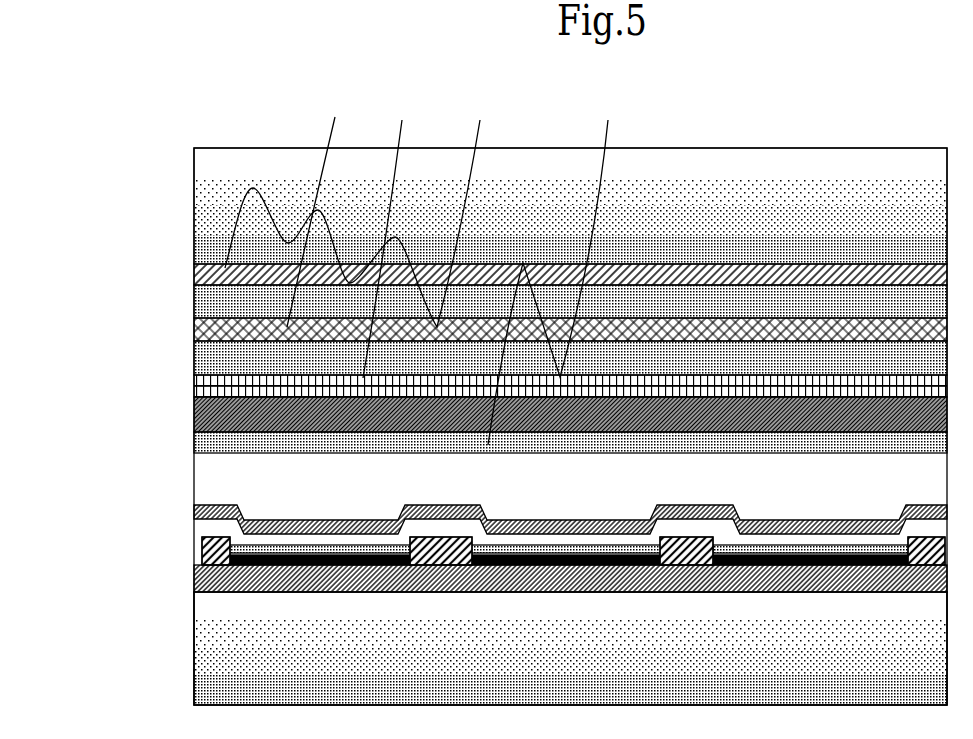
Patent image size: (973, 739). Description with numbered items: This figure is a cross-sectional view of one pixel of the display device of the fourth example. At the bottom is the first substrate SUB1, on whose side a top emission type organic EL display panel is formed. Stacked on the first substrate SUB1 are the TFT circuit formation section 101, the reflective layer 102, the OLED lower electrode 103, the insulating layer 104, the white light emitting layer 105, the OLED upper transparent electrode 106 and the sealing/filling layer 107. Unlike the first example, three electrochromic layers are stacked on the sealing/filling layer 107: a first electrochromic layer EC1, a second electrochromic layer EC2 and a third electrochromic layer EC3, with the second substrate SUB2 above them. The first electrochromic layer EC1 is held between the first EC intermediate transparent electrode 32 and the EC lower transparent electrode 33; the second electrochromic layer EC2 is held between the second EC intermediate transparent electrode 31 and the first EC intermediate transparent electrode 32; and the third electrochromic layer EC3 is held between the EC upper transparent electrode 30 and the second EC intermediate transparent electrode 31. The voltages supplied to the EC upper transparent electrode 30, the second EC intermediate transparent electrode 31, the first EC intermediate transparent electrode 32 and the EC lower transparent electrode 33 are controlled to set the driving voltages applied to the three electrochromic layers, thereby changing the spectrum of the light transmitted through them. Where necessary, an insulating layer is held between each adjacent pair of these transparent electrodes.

The EC upper transparent electrode 30 is at (315, 213).
The EC intermediate transparent electrode 2 31 is at (387, 240).
The EC intermediate transparent electrode 1 32 is at (358, 214).
The EC lower transparent electrode 33 is at (553, 273).
The second substrate SUB2 is at (225, 247).
The third electrochromic layer EC3 is at (203, 306).
The second electrochromic layer EC2 is at (222, 363).
The first electrochromic layer EC1 is at (203, 400).
The sealing/filling layer 107 is at (240, 482).
The OLED upper transparent electrode 106 is at (240, 538).
The white light emitting layer 105 is at (240, 542).
The insulating layer 104 is at (227, 565).
The OLED lower electrode 103 is at (217, 563).
The reflective layer 102 is at (280, 575).
The TFT circuit formation section 101 is at (353, 582).
The first substrate SUB1 is at (220, 690).